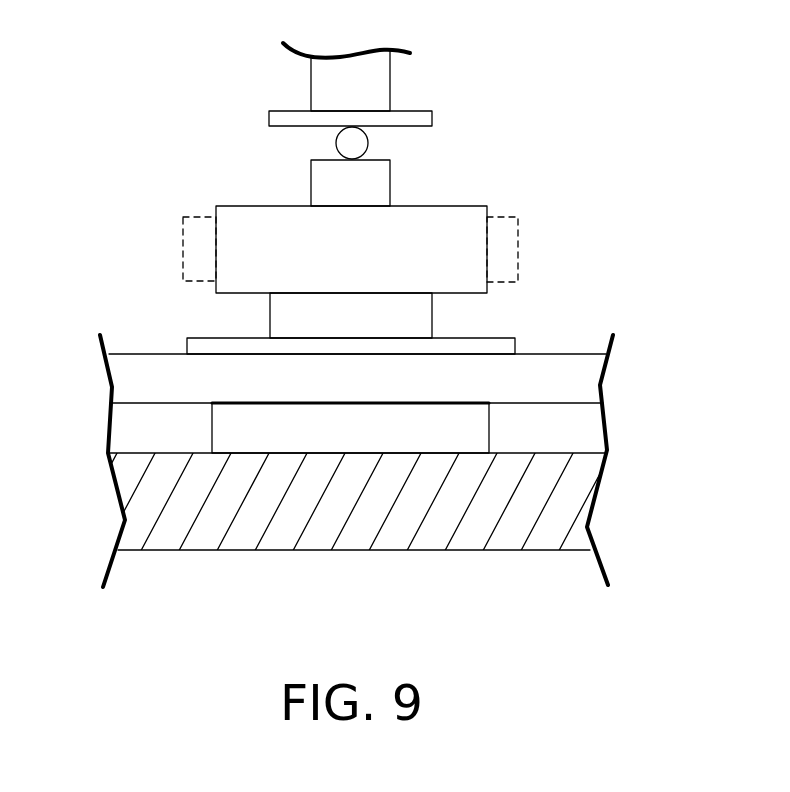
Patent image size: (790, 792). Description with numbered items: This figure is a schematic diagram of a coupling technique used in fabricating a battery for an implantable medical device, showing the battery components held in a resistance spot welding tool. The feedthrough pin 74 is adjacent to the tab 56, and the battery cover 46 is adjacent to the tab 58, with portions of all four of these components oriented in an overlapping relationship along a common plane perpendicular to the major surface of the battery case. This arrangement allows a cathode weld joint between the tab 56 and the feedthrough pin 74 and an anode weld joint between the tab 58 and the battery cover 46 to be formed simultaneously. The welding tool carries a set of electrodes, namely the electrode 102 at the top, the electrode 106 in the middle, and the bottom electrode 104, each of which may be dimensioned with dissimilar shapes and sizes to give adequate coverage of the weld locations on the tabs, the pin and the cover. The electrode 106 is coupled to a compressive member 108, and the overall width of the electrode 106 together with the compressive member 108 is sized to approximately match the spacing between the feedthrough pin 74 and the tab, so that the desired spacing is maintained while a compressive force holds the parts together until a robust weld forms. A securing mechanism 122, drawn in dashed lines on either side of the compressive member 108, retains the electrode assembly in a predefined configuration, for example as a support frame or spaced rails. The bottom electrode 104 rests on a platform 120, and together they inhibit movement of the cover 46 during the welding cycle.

The battery cover 46 is at (125, 385).
The tab 56 is at (283, 110).
The tab 58 is at (187, 340).
The feedthrough pin 74 is at (336, 137).
The electrode 102 is at (388, 89).
The bottom electrode 104 is at (492, 428).
The electrode 106 is at (368, 192).
The compressive member 108 is at (487, 207).
The platform 120 is at (573, 495).
The securing mechanism 122 is at (182, 258).